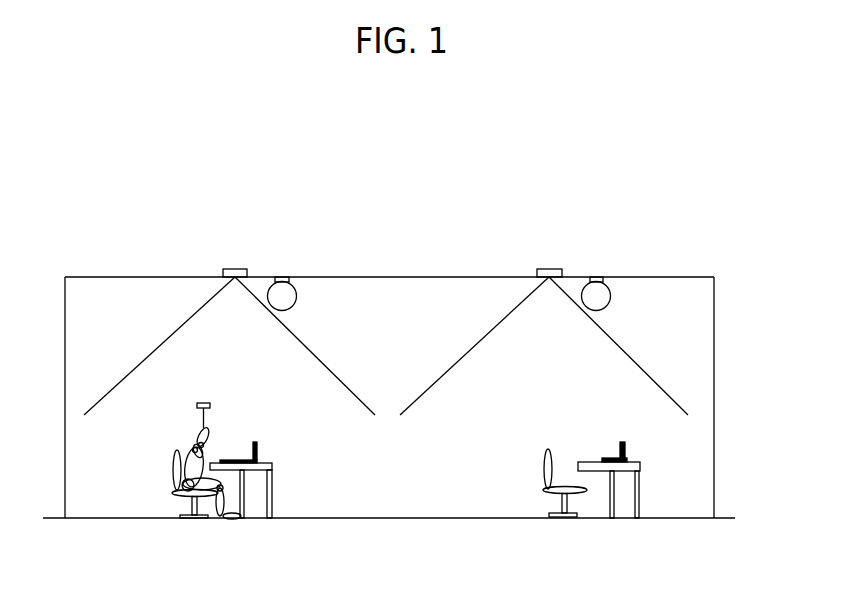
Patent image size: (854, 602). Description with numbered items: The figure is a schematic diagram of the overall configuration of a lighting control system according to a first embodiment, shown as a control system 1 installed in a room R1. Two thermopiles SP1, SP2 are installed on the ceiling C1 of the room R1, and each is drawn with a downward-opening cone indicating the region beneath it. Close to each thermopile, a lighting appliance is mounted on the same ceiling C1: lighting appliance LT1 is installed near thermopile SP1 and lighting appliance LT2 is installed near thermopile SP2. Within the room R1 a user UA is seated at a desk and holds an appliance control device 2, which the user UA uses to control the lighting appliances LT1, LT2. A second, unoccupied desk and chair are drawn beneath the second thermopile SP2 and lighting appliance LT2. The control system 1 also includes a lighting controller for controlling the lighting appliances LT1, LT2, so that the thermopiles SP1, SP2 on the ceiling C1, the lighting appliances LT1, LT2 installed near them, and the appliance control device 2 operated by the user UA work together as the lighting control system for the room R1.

The control system 1 is at (647, 180).
The appliance control device 2 is at (203, 402).
The thermopile SP1 is at (227, 269).
The thermopile SP2 is at (541, 269).
The lighting appliance LT1 is at (289, 277).
The lighting appliance LT2 is at (604, 277).
The ceiling C1 is at (680, 277).
The room R1 is at (705, 482).
The user UA is at (233, 521).